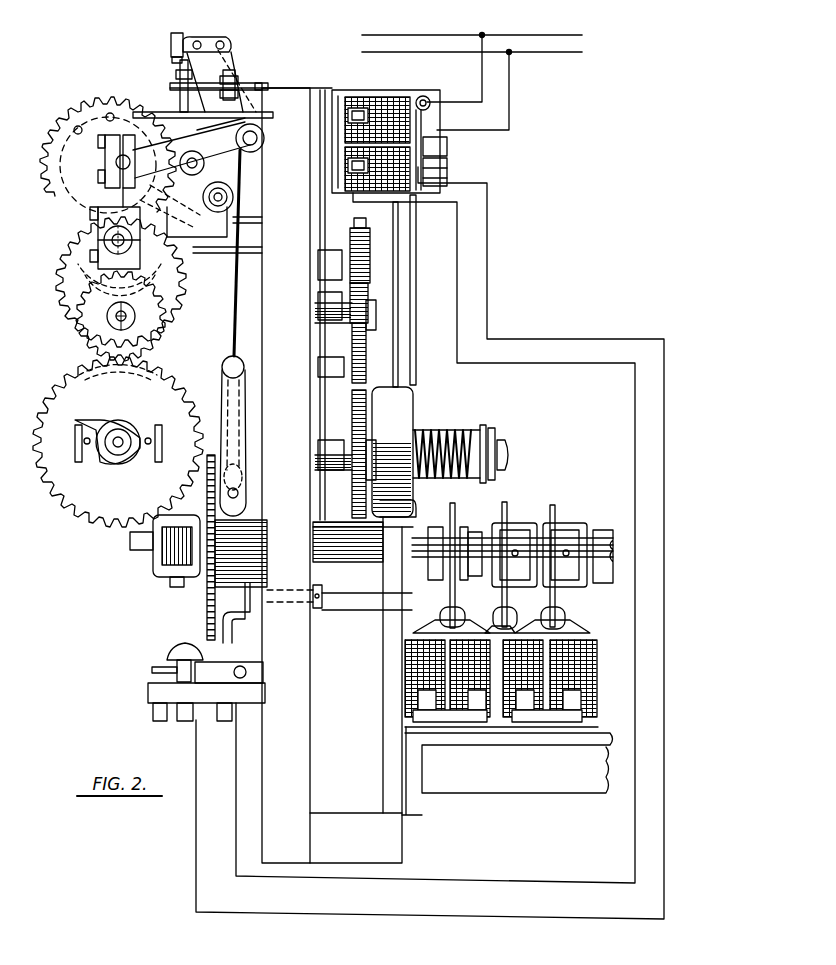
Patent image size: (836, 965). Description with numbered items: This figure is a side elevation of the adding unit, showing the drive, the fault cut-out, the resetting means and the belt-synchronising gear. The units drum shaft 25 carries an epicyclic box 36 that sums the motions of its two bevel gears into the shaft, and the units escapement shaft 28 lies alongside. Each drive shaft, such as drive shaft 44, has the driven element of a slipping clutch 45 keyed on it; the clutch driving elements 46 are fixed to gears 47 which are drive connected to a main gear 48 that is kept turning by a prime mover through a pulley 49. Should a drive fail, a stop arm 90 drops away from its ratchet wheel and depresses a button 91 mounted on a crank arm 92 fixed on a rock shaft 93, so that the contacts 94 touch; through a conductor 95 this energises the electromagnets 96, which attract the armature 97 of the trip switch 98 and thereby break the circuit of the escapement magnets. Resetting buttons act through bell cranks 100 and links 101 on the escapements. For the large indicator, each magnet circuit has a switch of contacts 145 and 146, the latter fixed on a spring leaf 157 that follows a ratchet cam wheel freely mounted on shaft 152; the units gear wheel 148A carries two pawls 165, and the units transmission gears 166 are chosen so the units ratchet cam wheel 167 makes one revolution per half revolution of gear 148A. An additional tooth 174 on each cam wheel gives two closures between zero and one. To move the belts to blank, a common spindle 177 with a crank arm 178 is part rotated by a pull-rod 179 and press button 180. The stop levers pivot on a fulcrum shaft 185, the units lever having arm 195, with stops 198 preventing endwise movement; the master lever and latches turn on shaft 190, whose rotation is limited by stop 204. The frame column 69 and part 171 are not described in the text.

The units drum shaft 25 is at (112, 455).
The units escapement shaft 28 is at (136, 550).
The epicyclic box 36 is at (158, 588).
The drive shaft 44 is at (508, 471).
The slipping clutch 45 is at (434, 418).
The clutch driving element 46 is at (405, 396).
The gear 47 is at (372, 447).
The main gear 48 is at (356, 238).
The pulley 49 is at (412, 333).
The vertical support column 69 is at (286, 475).
The stop arm 90 is at (237, 547).
The button 91 is at (183, 640).
The crank arm 92 is at (206, 691).
The rock shaft 93 is at (248, 673).
The contacts 94 is at (150, 670).
The conductor 95 is at (614, 339).
The electromagnet 96 is at (333, 90).
The armature 97 is at (450, 144).
The trip switch 98 is at (466, 176).
The bell crank 100 is at (343, 610).
The link 101 is at (250, 632).
The contact 145 is at (180, 70).
The contact 146 is at (160, 98).
The units gear wheel 148A is at (118, 442).
The shaft 152 is at (134, 164).
The spring leaf 157 is at (265, 134).
The pawl 165 is at (75, 465).
The units transmission gears 166 is at (168, 272).
The units ratchet cam wheel 167 is at (78, 205).
The pinion shaft 171 is at (160, 260).
The additional tooth 174 is at (121, 104).
The spindle 177 is at (201, 219).
The crank arm 178 is at (208, 159).
The pull-rod 179 is at (236, 270).
The press button 180 is at (223, 375).
The fulcrum shaft 185 is at (233, 200).
The shaft 190 is at (262, 150).
The arm 195 is at (170, 44).
The stop 198 is at (232, 46).
The stop 204 is at (262, 166).